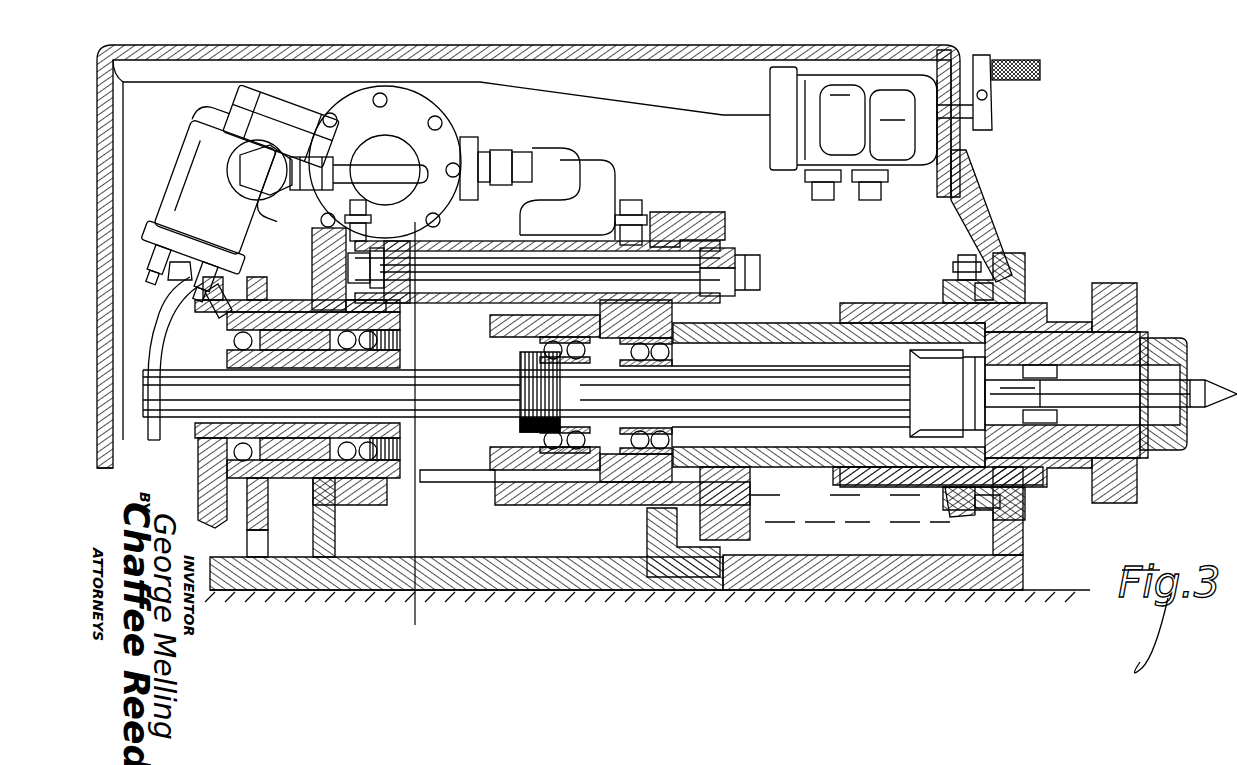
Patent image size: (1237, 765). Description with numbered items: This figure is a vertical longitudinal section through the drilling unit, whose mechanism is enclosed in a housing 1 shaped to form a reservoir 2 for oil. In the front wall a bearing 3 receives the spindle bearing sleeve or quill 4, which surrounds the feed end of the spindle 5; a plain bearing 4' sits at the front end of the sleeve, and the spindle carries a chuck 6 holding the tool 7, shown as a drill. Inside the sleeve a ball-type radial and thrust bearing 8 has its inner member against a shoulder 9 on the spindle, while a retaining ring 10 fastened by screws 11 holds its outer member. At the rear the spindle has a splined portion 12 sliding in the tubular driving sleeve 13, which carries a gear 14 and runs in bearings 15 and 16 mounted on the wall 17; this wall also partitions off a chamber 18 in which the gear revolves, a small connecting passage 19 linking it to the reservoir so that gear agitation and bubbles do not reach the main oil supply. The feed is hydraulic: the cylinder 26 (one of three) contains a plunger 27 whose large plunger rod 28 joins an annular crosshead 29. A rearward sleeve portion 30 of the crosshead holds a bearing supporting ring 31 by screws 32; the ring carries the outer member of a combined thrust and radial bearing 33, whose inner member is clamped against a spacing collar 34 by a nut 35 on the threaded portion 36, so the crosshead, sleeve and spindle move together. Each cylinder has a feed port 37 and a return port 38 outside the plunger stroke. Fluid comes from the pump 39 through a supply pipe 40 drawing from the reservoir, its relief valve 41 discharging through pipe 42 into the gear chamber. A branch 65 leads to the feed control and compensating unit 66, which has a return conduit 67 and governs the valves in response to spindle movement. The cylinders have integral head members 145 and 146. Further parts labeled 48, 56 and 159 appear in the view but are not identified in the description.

The housing 1 is at (580, 45).
The reservoir 2 is at (91, 74).
The bearing 3 is at (1038, 280).
The spindle bearing sleeve 4 is at (966, 384).
The bearing 4' is at (1066, 356).
The spindle 5 is at (412, 226).
The chuck 6 is at (1168, 342).
The tool 7 is at (1200, 378).
The radial and thrust bearing 8 is at (668, 428).
The shoulder 9 is at (672, 380).
The retaining ring 10 is at (600, 482).
The screws 11 is at (572, 482).
The splined portion 12 is at (430, 430).
The driving sleeve 13 is at (292, 440).
The gear 14 is at (212, 508).
The bearing 15 is at (270, 320).
The bearing 16 is at (330, 325).
The wall 17 is at (262, 508).
The chamber 18 is at (242, 588).
The connecting passage 19 is at (262, 542).
The cylinder 26 is at (470, 252).
The plunger 27 is at (395, 298).
The plunger rod 28 is at (512, 258).
The annular crosshead 29 is at (733, 256).
The sleeve portion 30 is at (680, 319).
The bearing supporting ring 31 is at (545, 482).
The screws 32 is at (472, 470).
The combined thrust and radial bearing 33 is at (590, 428).
The spacing collar 34 is at (622, 362).
The nut 35 is at (520, 360).
The threaded portion 36 is at (555, 386).
The port 37 is at (312, 238).
The port 38 is at (662, 212).
The pump 39 is at (442, 133).
The supply pipe 40 is at (590, 172).
The relief valve 41 is at (200, 162).
The pipe 42 is at (163, 325).
The hub 48 is at (419, 168).
The bolt 56 is at (350, 212).
The branch 65 is at (866, 198).
The feed control and compensating unit 66 is at (770, 99).
The return conduit 67 is at (826, 200).
The head member 145 is at (336, 535).
The head member 146 is at (650, 525).
The fitting 159 is at (632, 202).